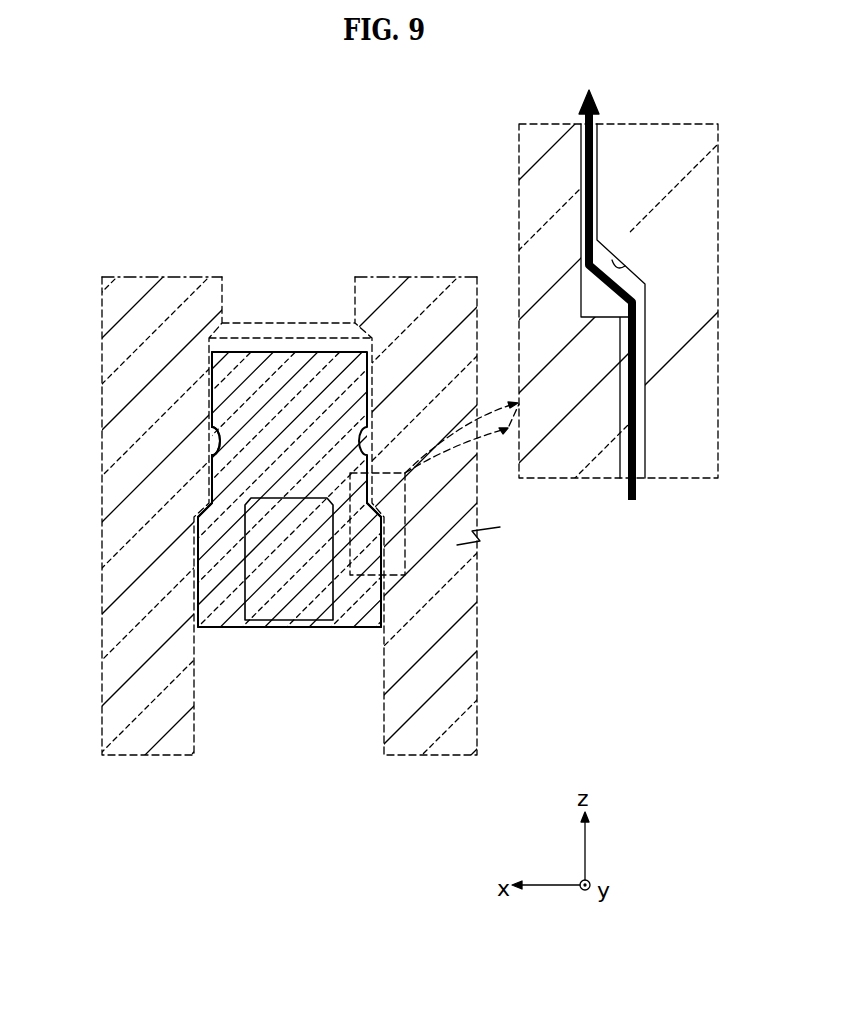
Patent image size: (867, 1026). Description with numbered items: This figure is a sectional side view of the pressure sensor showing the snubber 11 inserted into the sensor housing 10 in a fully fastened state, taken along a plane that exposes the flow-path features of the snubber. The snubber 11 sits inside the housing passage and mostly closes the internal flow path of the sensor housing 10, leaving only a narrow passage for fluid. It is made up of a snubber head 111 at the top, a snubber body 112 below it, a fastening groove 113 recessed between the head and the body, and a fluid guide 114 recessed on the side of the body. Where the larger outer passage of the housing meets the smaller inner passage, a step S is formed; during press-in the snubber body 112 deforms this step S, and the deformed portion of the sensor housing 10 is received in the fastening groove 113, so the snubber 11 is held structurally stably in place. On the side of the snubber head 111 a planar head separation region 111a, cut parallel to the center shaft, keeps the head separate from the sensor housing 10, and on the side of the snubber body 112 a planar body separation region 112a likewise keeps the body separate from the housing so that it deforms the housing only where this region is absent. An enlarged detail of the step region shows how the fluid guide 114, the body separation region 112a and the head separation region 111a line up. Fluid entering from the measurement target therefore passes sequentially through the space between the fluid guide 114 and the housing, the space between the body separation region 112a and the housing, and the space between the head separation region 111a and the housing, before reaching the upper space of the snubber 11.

The sensor housing 10 is at (125, 682).
The snubber 11 is at (342, 382).
The snubber head 111 is at (270, 358).
The head separation region 111a is at (212, 388).
The snubber body 112 is at (223, 547).
The body separation region 112a is at (212, 497).
The fastening groove 113 is at (214, 441).
The fluid guide 114 is at (200, 590).
The step S is at (627, 270).